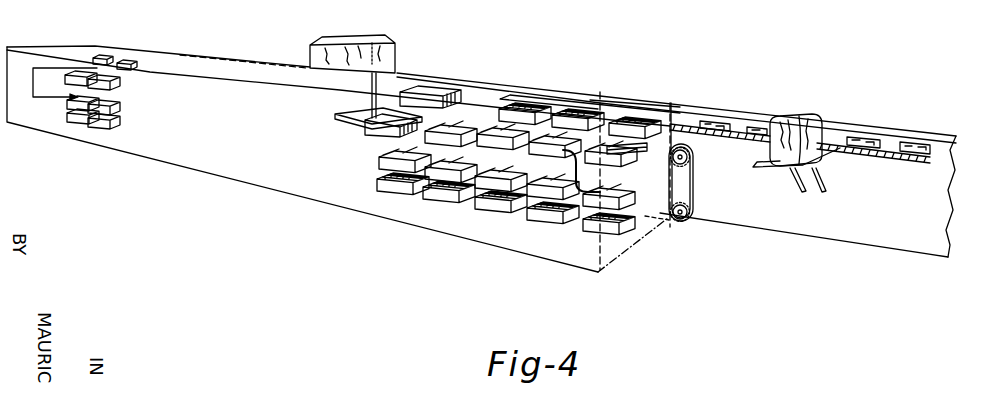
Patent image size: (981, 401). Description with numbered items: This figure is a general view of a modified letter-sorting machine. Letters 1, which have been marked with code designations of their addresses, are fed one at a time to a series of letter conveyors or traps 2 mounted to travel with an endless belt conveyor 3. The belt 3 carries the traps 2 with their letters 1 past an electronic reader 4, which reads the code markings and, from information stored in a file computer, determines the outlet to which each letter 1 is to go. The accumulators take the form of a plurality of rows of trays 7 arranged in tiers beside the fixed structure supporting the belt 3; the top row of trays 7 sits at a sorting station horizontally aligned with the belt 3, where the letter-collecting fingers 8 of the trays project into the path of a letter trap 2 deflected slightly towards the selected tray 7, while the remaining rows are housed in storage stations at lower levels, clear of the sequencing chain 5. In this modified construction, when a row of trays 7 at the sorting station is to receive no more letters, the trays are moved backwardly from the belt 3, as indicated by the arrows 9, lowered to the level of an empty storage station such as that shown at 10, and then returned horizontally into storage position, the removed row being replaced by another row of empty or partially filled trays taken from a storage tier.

The letters 1 is at (737, 120).
The letter conveyors or traps 2 is at (858, 148).
The endless belt conveyor 3 is at (748, 128).
The electronic reader 4 is at (817, 133).
The sequencing chain 5 is at (690, 217).
The trays 7 is at (500, 117).
The letter-collecting fingers 8 is at (563, 147).
The arrows 9 is at (28, 80).
The empty storage station 10 is at (107, 96).